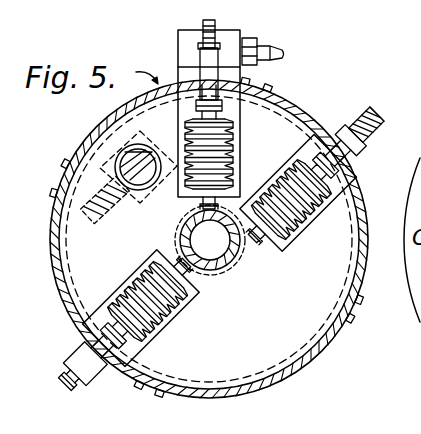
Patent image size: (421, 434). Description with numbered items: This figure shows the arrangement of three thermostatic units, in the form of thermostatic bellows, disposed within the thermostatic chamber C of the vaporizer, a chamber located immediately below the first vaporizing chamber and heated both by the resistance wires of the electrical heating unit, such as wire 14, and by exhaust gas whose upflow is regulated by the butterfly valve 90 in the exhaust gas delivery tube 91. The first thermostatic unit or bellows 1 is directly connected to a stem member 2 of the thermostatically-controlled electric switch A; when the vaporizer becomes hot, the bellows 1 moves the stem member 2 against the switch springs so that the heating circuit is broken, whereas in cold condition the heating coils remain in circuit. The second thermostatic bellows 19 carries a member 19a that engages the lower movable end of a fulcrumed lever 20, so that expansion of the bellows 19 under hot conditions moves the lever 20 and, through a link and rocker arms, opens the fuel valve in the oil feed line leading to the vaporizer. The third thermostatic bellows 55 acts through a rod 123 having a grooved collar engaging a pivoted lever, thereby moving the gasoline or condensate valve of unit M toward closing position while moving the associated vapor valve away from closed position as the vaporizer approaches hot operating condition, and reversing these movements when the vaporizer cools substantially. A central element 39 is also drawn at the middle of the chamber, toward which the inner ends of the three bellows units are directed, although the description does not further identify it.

The thermostatic unit or bellows 1 is at (130, 337).
The stem member 2 is at (110, 340).
The resistance wire 14 is at (209, 255).
The thermostatic bellows 19 is at (317, 152).
The member 19a is at (352, 132).
The lever 20 is at (376, 111).
The hub 39 is at (216, 258).
The thermostatic bellows 55 is at (198, 110).
The butterfly valve 90 is at (131, 170).
The exhaust gas delivery tube 91 is at (158, 181).
The rod 123 is at (203, 26).
The electric switch A is at (93, 378).
The thermostatic chamber C is at (338, 292).
The valve unit M is at (242, 33).